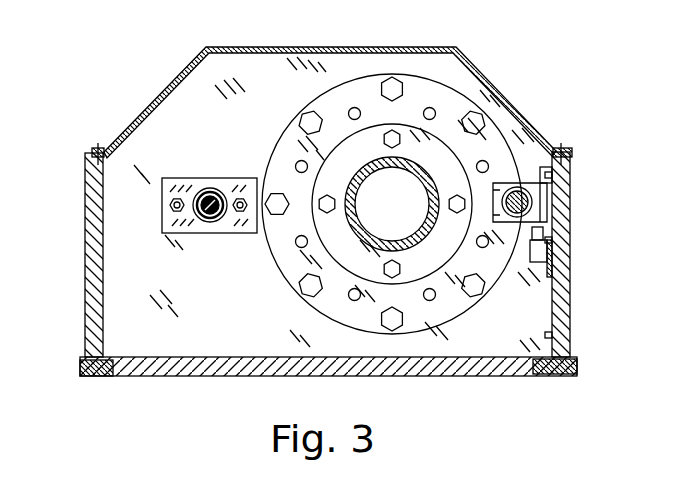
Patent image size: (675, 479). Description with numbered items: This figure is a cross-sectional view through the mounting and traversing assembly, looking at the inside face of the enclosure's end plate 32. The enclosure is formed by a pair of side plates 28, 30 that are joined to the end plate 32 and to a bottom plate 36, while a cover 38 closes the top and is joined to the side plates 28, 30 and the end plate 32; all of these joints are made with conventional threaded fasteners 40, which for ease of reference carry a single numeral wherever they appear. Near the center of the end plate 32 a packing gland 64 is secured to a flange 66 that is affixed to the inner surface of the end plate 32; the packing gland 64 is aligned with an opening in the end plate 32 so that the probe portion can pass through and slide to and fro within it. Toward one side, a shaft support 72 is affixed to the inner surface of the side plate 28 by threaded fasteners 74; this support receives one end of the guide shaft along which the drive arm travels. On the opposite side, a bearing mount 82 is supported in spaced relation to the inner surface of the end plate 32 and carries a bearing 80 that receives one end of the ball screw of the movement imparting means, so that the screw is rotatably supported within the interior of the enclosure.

The side plate 28 is at (574, 266).
The side plate 30 is at (86, 292).
The end plate 32 is at (243, 334).
The bottom plate 36 is at (459, 377).
The cover 38 is at (350, 18).
The threaded fasteners 40 is at (96, 148).
The packing gland 64 is at (377, 154).
The flange 66 is at (289, 128).
The shaft support 72 is at (543, 210).
The threaded fasteners 74 is at (540, 170).
The bearing 80 is at (210, 222).
The bearing mount 82 is at (196, 178).